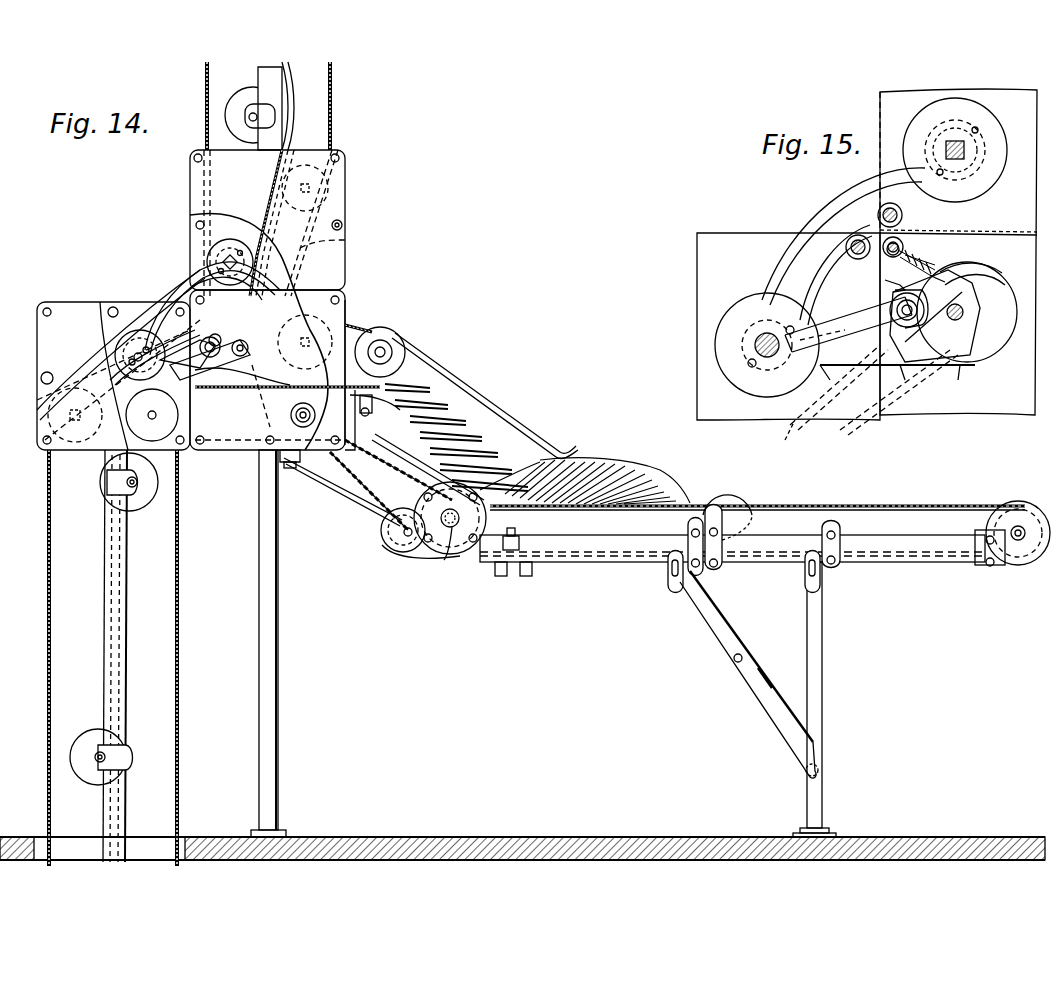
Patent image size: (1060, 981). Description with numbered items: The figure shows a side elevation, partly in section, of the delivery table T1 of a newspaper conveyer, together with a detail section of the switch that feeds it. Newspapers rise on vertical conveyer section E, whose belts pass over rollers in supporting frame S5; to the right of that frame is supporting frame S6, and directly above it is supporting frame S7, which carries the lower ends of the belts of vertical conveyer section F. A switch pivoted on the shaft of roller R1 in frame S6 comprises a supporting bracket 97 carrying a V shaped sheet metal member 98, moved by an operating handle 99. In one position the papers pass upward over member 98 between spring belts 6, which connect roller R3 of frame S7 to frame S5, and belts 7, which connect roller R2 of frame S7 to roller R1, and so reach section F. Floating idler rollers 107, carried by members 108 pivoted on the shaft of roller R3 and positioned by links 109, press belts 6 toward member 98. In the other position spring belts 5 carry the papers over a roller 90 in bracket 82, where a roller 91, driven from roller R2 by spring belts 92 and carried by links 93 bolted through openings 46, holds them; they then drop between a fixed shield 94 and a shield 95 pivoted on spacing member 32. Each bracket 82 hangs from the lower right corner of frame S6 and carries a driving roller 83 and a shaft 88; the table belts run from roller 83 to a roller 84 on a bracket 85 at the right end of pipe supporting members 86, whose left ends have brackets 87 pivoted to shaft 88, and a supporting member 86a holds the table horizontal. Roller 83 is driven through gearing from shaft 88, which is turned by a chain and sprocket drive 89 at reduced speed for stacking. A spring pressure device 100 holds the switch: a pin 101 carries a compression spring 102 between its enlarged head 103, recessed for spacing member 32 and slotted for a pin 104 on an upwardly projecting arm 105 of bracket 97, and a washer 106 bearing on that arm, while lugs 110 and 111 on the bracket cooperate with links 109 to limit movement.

In FIG. 14, the vertical conveyer section F is at (332, 107).
In FIG. 14, the vertical conveyer section E is at (179, 636).
In FIG. 14, the supporting frame S5 is at (37, 390).
In FIG. 14, the supporting frame S6 is at (215, 445).
In FIG. 14, the supporting frame S7 is at (347, 190).
In FIG. 14, the set of belts 7 is at (345, 240).
In FIG. 14, the driving roller R3 is at (222, 232).
In FIG. 14, the driving roller R2 is at (310, 312).
In FIG. 15, the driving roller R1 is at (1000, 292).
In FIG. 14, the set of spring belts 5 is at (215, 440).
In FIG. 14, the set of spring belts 6 is at (138, 288).
In FIG. 15, the spacing member 32 is at (866, 258).
In FIG. 14, the openings 46 is at (357, 305).
In FIG. 14, the bracket 82 is at (320, 475).
In FIG. 14, the driving roller 83 is at (410, 552).
In FIG. 14, the roller 84 is at (1025, 568).
In FIG. 14, the bracket 85 is at (1045, 515).
In FIG. 14, the pipe supporting members 86 is at (618, 562).
In FIG. 14, the supporting member 86a is at (822, 664).
In FIG. 14, the brackets 87 is at (505, 576).
In FIG. 14, the shaft 88 is at (452, 560).
In FIG. 14, the chain and sprocket drive 89 is at (358, 490).
In FIG. 14, the roller 90 is at (385, 395).
In FIG. 14, the roller 91 is at (405, 345).
In FIG. 14, the set of spring belts 92 is at (372, 335).
In FIG. 14, the links 93 is at (383, 330).
In FIG. 14, the shield 94 is at (422, 470).
In FIG. 14, the shield 95 is at (500, 405).
In FIG. 14, the supporting bracket 97 is at (200, 388).
In FIG. 15, the supporting bracket 97 is at (848, 370).
In FIG. 14, the V shaped sheet metal member 98 is at (150, 395).
In FIG. 15, the V shaped sheet metal member 98 is at (905, 390).
In FIG. 14, the operating handle 99 is at (268, 425).
In FIG. 14, the spring pressure device 100 is at (220, 330).
In FIG. 15, the spring pressure device 100 is at (900, 245).
In FIG. 15, the pin 101 is at (943, 272).
In FIG. 15, the compression spring 102 is at (912, 268).
In FIG. 14, the enlarged head 103 is at (185, 325).
In FIG. 15, the enlarged head 103 is at (860, 215).
In FIG. 15, the pin 104 is at (980, 255).
In FIG. 15, the arm 105 is at (995, 280).
In FIG. 15, the washer 106 is at (940, 250).
In FIG. 14, the floating idler rollers 107 is at (108, 352).
In FIG. 15, the floating idler rollers 107 is at (735, 372).
In FIG. 14, the members 108 is at (155, 290).
In FIG. 15, the members 108 is at (770, 280).
In FIG. 15, the links 109 is at (850, 308).
In FIG. 15, the projecting lug 110 is at (928, 345).
In FIG. 15, the projecting lug 111 is at (877, 292).
In FIG. 14, the delivery table T1 is at (864, 490).